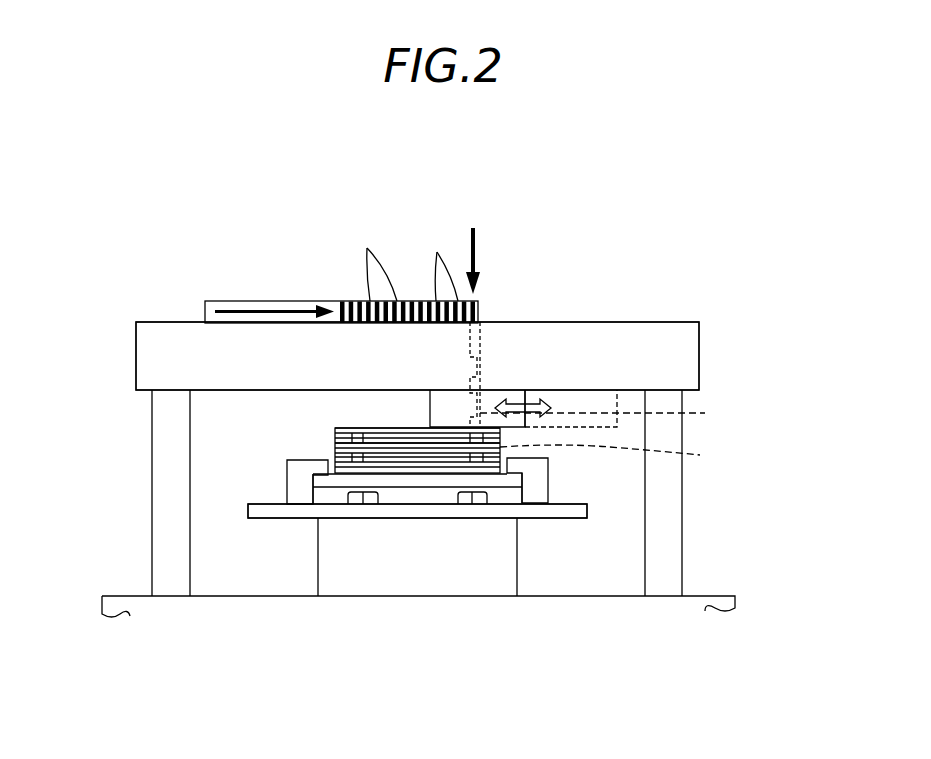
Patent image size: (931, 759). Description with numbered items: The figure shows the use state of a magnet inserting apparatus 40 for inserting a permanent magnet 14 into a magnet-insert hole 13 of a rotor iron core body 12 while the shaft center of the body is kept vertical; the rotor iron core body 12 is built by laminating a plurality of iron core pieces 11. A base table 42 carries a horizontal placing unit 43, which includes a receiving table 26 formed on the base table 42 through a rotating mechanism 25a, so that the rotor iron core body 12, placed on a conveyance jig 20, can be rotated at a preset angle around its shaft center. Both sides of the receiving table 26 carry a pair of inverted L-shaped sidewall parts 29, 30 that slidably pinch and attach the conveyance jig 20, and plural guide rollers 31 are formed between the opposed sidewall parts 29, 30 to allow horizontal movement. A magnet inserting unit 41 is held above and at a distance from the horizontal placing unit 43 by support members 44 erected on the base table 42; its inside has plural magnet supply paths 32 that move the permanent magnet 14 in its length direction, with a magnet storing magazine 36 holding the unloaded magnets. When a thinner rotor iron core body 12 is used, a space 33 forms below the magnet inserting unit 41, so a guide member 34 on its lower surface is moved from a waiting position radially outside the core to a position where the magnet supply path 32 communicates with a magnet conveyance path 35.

The iron core piece 11 is at (334, 432).
The rotor iron core body 12 is at (334, 427).
The magnet-insert hole 13 is at (616, 457).
The permanent magnet 14 is at (530, 389).
The conveyance jig 20 is at (520, 480).
The rotating mechanism 25a is at (422, 575).
The receiving table 26 is at (583, 522).
The sidewall part 29 is at (290, 491).
The sidewall part 30 is at (547, 493).
The guide roller 31 is at (363, 505).
The magnet supply path 32 is at (483, 367).
The space 33 is at (392, 405).
The guide member 34 is at (520, 394).
The magnet conveyance path 35 is at (608, 408).
The magnet storing magazine 36 is at (486, 303).
The magnet inserting apparatus 40 is at (690, 298).
The magnet inserting unit 41 is at (706, 354).
The base table 42 is at (736, 605).
The horizontal placing unit 43 is at (600, 510).
The support member 44 is at (168, 560).